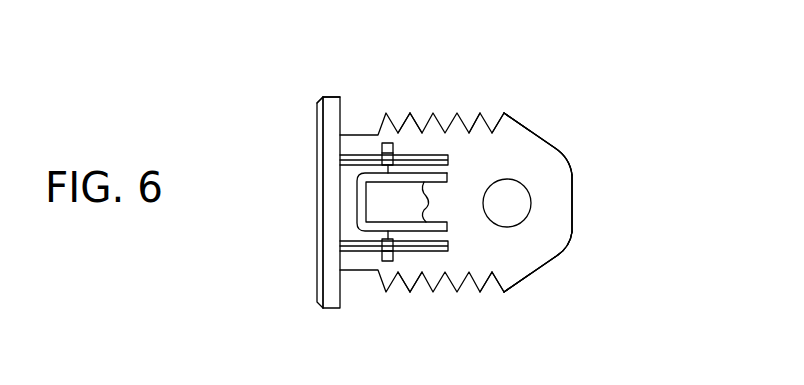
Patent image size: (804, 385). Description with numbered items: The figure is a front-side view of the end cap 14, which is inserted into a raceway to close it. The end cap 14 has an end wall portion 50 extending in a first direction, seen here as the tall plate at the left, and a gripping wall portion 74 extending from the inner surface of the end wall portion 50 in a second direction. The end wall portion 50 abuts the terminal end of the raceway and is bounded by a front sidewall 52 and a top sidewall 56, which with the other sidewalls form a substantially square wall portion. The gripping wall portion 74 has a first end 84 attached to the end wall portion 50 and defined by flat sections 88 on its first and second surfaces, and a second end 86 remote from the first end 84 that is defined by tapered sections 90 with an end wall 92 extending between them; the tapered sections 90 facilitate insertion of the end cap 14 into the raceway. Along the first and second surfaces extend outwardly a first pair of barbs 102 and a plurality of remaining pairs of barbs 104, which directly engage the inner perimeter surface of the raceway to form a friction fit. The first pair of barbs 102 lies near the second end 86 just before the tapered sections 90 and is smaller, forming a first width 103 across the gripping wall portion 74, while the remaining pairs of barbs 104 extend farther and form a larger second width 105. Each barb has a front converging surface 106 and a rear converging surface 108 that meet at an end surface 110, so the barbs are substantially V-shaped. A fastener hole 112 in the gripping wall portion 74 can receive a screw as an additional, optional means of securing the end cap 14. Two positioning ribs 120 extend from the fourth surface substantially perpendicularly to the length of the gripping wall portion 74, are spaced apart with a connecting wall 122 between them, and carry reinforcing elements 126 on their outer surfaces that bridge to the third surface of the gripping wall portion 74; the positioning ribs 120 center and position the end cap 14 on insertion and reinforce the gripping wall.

The end cap 14 is at (620, 84).
The end wall portion 50 is at (283, 182).
The front sidewall 52 is at (335, 250).
The top sidewall 56 is at (328, 97).
The gripping wall portion 74 is at (586, 337).
The first end 84 is at (340, 146).
The second end 86 is at (558, 183).
The flat sections 88 is at (360, 134).
The tapered sections 90 is at (550, 136).
The end wall 92 is at (575, 224).
The first pair of barbs 102 is at (505, 118).
The first width 103 is at (537, 250).
The remaining pairs of barbs 104 is at (514, 90).
The second width 105 is at (453, 186).
The front converging surface 106 is at (418, 123).
The rear converging surface 108 is at (475, 122).
The end surface 110 is at (405, 128).
The fastener hole 112 is at (526, 203).
The positioning ribs 120 is at (401, 202).
The connecting wall 122 is at (357, 192).
The reinforcing elements 126 is at (390, 143).